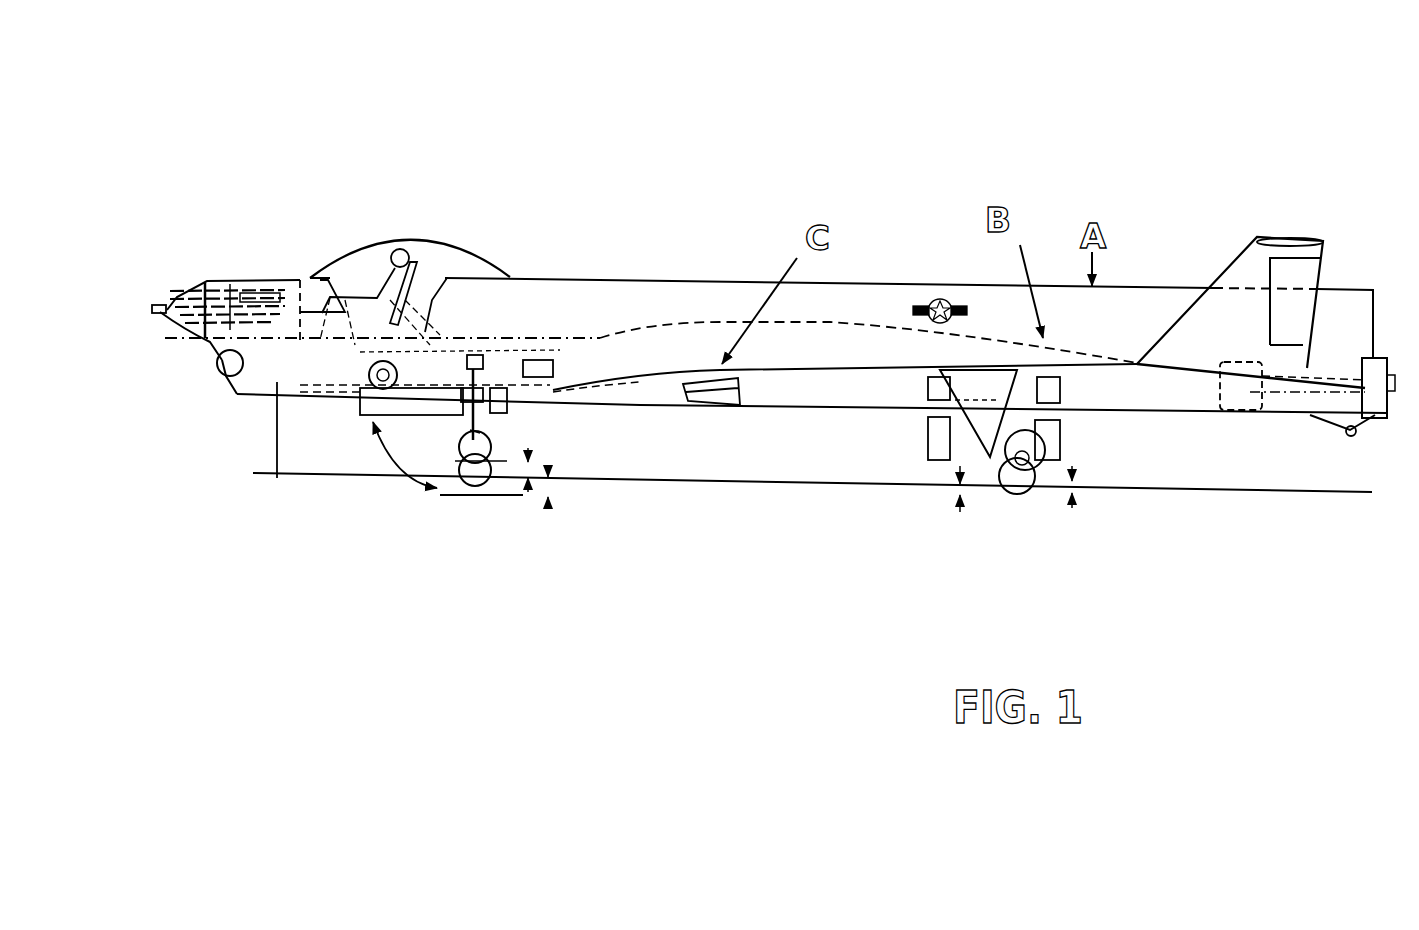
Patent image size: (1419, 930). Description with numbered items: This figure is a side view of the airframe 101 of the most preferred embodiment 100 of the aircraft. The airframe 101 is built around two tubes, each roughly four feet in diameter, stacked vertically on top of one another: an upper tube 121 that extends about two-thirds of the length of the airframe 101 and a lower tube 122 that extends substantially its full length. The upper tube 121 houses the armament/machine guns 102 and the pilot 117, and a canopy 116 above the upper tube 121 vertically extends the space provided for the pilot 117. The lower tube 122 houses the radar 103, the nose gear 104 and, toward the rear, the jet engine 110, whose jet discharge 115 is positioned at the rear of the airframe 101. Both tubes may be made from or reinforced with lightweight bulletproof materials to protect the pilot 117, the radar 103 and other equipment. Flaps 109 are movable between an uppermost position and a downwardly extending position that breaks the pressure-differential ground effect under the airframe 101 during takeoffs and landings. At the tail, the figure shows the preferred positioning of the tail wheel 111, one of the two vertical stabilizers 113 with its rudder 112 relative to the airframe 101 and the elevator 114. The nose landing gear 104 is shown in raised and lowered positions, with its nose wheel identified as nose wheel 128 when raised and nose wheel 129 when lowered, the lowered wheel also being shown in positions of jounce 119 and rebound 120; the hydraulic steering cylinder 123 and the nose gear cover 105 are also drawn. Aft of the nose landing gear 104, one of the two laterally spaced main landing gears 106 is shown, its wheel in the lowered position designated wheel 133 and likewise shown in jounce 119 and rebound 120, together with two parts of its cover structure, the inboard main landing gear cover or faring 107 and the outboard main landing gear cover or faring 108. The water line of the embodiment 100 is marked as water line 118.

The most preferred embodiment 100 is at (474, 76).
The airframe 101 is at (659, 310).
The armament/machine guns 102 is at (162, 312).
The radar 103 is at (228, 380).
The nose gear 104 is at (484, 431).
The nose gear cover 105 is at (397, 410).
The main landing gear 106 is at (993, 455).
The inboard main landing gear cover or faring 107 is at (930, 441).
The outboard main landing gear cover or faring 108 is at (1062, 394).
The flaps 109 is at (700, 394).
The jet engine 110 is at (1240, 405).
The tail wheel 111 is at (1350, 445).
The rudder 112 is at (1301, 273).
The vertical stabilizer 113 is at (1227, 283).
The elevator 114 is at (1275, 243).
The jet discharge 115 is at (1408, 380).
The canopy 116 is at (468, 262).
The pilot 117 is at (381, 291).
The water line 118 is at (1216, 495).
The jounce 119 is at (532, 471).
The rebound 120 is at (566, 490).
The upper tube 121 is at (290, 306).
The lower tube 122 is at (282, 454).
The hydraulic steering cylinder 123 is at (522, 357).
The nose wheel (raised position) 128 is at (368, 399).
The nose wheel (lowered position) 129 is at (468, 490).
The main landing gear wheel (lowered position) 133 is at (1042, 474).